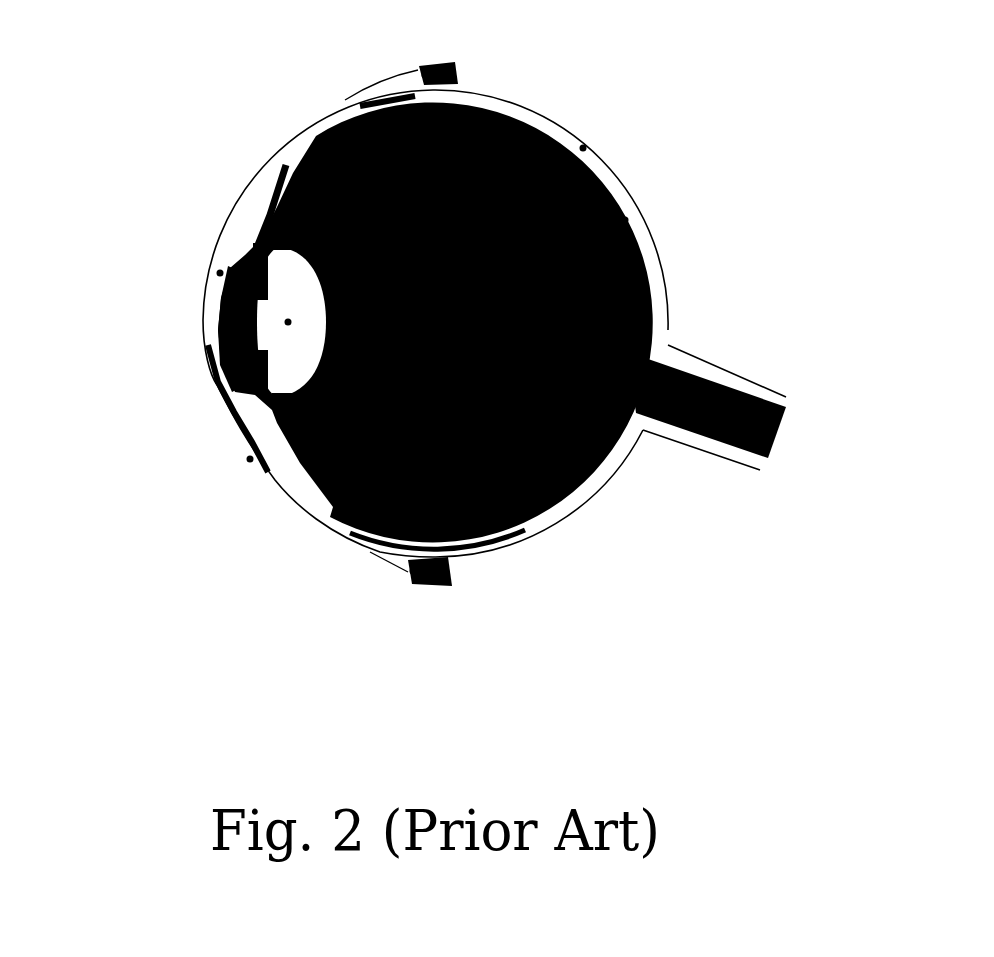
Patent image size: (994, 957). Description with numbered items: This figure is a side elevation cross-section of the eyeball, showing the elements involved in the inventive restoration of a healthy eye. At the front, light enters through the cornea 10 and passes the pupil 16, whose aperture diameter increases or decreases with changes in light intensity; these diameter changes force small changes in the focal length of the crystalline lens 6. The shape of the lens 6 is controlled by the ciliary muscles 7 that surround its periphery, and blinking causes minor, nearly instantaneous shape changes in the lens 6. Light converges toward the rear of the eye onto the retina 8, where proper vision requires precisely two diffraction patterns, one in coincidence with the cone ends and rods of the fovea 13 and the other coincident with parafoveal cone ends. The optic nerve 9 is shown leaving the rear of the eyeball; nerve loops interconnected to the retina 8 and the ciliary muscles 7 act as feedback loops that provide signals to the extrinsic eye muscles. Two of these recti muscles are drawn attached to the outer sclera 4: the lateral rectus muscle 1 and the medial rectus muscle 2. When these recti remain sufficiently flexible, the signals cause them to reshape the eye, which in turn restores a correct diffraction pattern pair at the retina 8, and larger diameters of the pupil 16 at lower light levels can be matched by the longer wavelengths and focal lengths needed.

The lateral rectus muscle 1 is at (460, 70).
The medial rectus muscle 2 is at (450, 585).
The sclera 4 is at (586, 148).
The lens 6 is at (318, 125).
The ciliary muscles 7 is at (286, 482).
The retina 8 is at (648, 280).
The nerve 9 is at (708, 430).
The cornea 10 is at (218, 272).
The fovea 13 is at (645, 322).
The pupil 16 is at (153, 318).